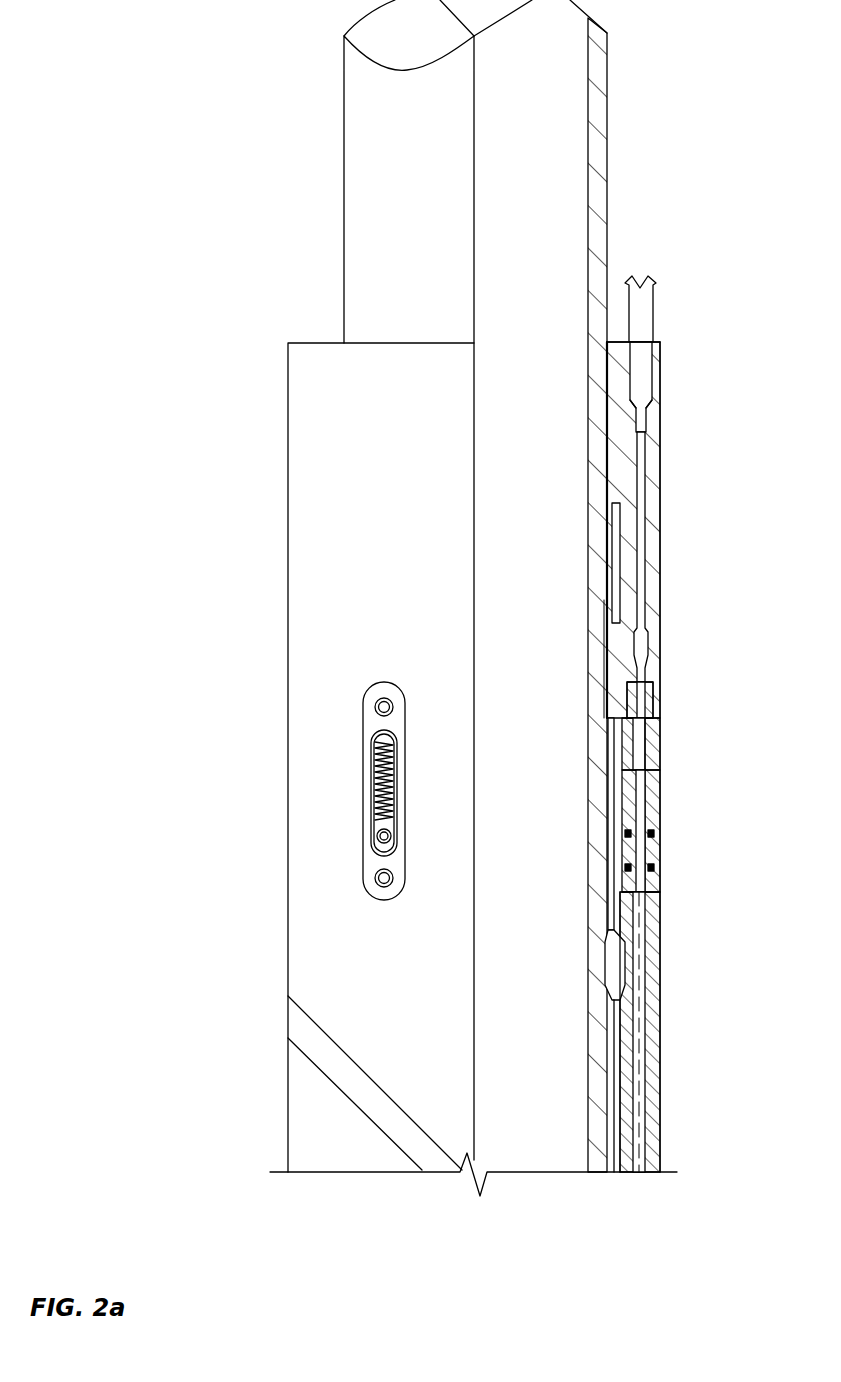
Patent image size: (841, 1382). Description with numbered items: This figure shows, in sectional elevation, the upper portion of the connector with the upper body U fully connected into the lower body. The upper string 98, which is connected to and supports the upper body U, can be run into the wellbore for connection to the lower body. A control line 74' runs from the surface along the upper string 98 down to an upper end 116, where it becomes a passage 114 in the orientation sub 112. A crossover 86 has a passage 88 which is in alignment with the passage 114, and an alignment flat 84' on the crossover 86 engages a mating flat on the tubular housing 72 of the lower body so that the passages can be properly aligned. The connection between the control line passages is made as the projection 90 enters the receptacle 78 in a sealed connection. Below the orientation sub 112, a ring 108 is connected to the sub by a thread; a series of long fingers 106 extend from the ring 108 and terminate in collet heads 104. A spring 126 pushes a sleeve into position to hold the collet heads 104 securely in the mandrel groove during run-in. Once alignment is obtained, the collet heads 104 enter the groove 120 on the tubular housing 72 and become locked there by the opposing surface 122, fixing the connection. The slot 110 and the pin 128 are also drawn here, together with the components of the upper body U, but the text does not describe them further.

The upper string 98 is at (607, 133).
The control line 74' is at (681, 309).
The upper end 116 is at (660, 345).
The upper body U is at (665, 400).
The passage 114 is at (641, 462).
The orientation sub 112 is at (660, 532).
The slot 110 is at (616, 578).
The ring 108 is at (607, 660).
The passage 88 is at (640, 735).
The crossover 86 is at (655, 755).
The receptacle 78 is at (656, 800).
The long fingers 106 is at (610, 843).
The projection 90 is at (655, 888).
The collet heads 104 is at (615, 962).
The groove 120 is at (641, 970).
The opposing surface 122 is at (612, 1080).
The tubular housing 72 is at (664, 1098).
The spring 126 is at (372, 763).
The pin 128 is at (372, 843).
The alignment flat 84' is at (343, 1058).